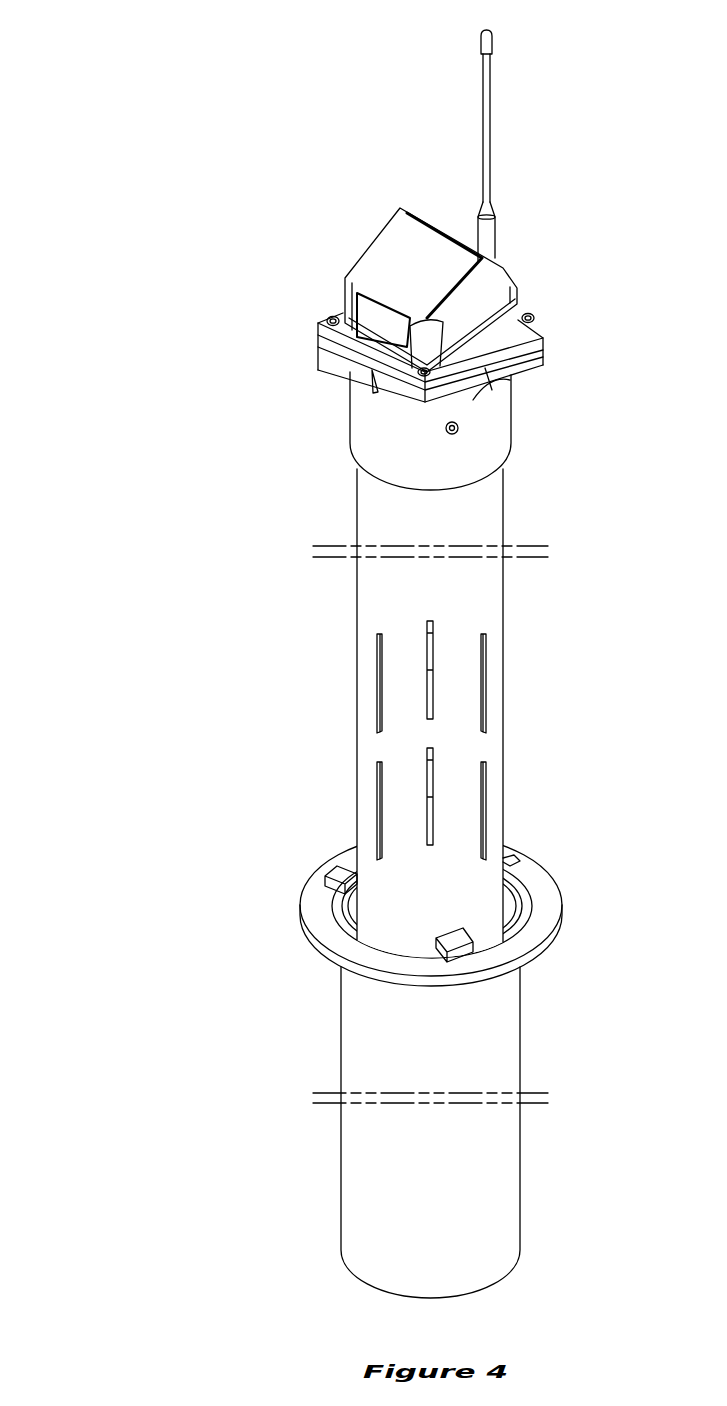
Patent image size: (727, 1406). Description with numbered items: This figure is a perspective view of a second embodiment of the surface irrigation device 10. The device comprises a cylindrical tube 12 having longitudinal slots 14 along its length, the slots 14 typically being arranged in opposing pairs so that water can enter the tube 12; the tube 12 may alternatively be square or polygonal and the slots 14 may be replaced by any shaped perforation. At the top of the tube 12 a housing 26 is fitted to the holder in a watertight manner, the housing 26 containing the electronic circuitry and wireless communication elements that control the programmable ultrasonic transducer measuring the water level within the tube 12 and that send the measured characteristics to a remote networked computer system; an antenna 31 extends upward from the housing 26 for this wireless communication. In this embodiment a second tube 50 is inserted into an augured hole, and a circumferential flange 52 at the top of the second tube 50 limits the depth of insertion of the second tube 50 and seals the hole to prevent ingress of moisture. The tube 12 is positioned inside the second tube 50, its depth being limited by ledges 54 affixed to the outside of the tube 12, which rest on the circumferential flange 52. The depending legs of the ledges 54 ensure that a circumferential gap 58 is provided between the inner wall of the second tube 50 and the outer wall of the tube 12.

The surface irrigation device 10 is at (112, 72).
The cylindrical tube 12 is at (503, 640).
The longitudinal slots 14 is at (483, 803).
The housing 26 is at (485, 302).
The antenna 31 is at (486, 123).
The second tube 50 is at (507, 1033).
The circumferential flange 52 is at (530, 876).
The ledges 54 is at (335, 880).
The circumferential gap 58 is at (508, 905).